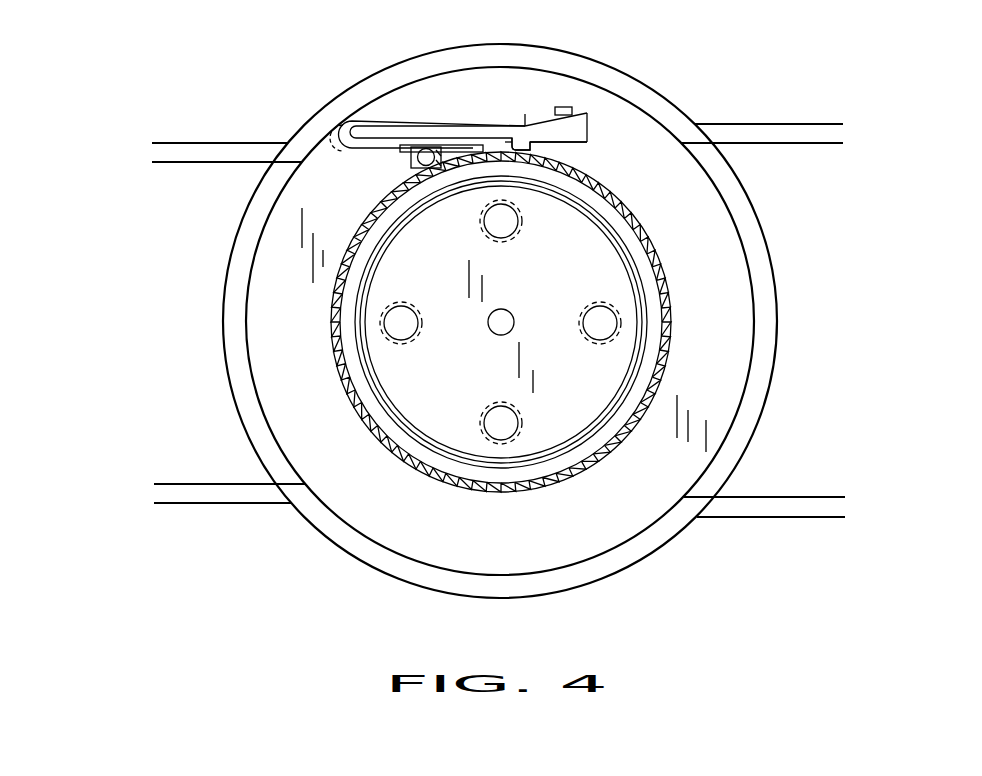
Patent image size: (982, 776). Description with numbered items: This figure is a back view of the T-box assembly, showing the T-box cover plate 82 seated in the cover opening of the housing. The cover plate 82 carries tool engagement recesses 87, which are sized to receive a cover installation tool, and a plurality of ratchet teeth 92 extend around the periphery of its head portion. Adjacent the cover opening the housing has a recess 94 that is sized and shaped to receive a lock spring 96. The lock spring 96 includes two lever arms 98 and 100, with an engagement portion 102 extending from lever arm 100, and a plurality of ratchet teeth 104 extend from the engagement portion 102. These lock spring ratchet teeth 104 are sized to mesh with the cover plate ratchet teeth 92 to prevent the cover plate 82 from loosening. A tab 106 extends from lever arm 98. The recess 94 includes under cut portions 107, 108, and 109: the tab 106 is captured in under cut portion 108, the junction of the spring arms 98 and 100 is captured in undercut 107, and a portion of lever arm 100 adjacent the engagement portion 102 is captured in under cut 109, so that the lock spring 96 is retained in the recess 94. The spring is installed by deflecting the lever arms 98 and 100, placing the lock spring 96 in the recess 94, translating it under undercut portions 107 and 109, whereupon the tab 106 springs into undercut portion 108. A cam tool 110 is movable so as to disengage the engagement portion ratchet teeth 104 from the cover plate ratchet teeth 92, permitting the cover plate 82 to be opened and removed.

The T-box cover plate 82 is at (655, 347).
The tool engagement recesses 87 is at (503, 225).
The ratchet teeth 92 is at (576, 322).
The recess 94 is at (587, 142).
The lock spring 96 is at (410, 108).
The lever arm 98 is at (563, 95).
The lever arm 100 is at (383, 146).
The engagement portion 102 is at (505, 142).
The ratchet teeth 104 is at (530, 128).
The tab 106 is at (565, 107).
The under cut portion 107 is at (338, 145).
The under cut portion 108 is at (587, 121).
The under cut portion 109 is at (472, 160).
The cam tool 110 is at (456, 162).